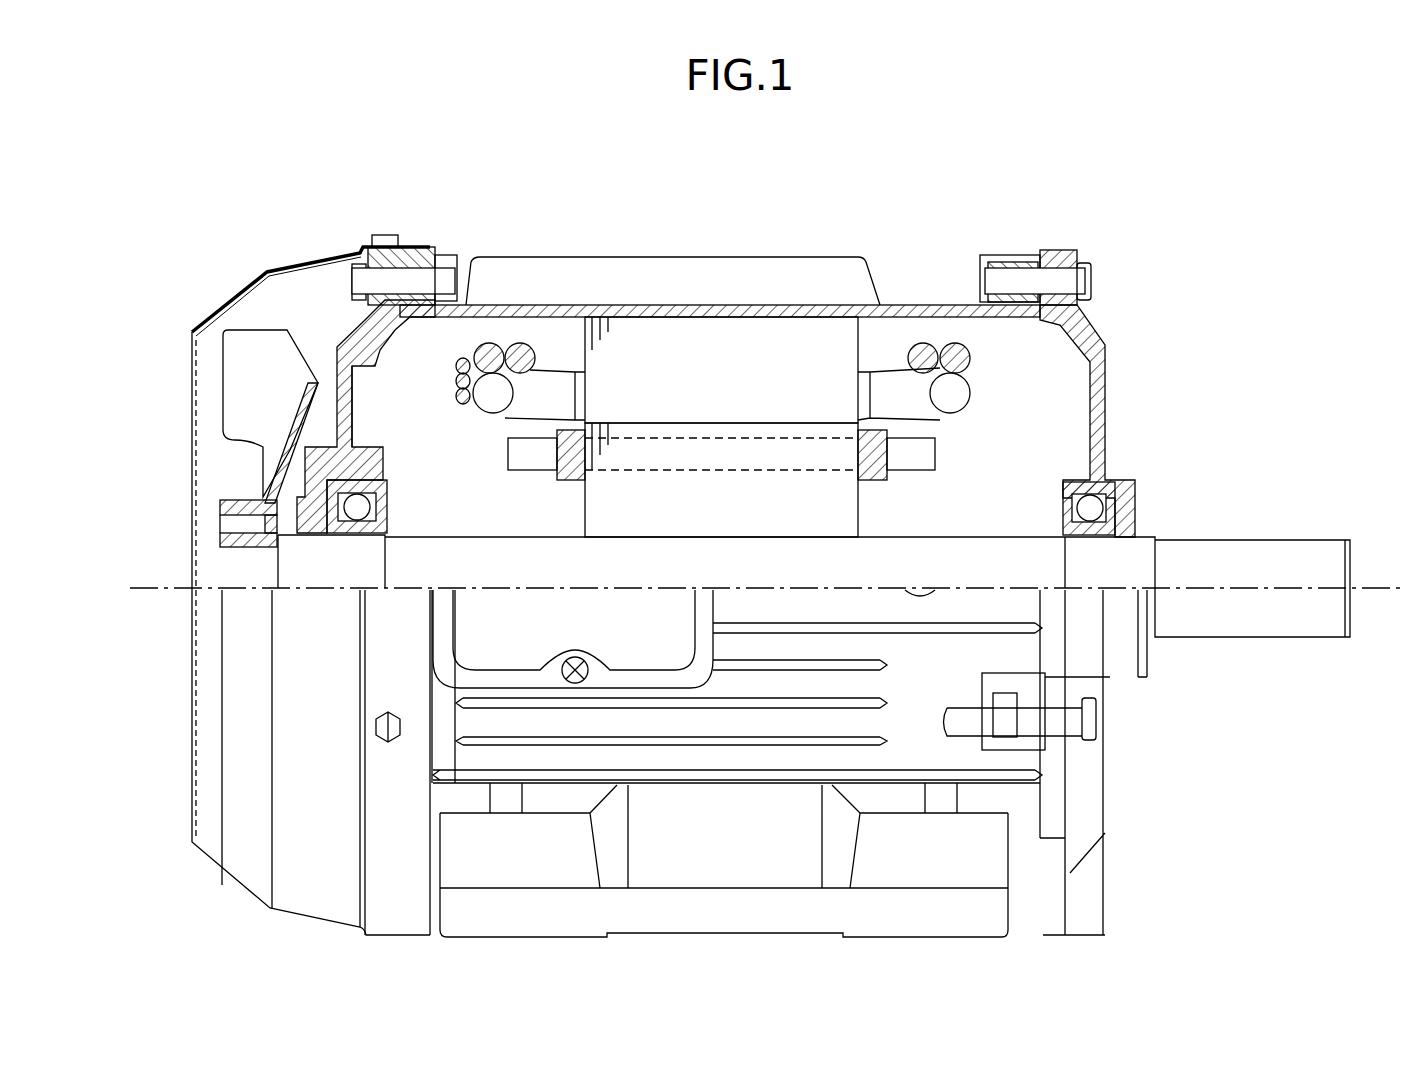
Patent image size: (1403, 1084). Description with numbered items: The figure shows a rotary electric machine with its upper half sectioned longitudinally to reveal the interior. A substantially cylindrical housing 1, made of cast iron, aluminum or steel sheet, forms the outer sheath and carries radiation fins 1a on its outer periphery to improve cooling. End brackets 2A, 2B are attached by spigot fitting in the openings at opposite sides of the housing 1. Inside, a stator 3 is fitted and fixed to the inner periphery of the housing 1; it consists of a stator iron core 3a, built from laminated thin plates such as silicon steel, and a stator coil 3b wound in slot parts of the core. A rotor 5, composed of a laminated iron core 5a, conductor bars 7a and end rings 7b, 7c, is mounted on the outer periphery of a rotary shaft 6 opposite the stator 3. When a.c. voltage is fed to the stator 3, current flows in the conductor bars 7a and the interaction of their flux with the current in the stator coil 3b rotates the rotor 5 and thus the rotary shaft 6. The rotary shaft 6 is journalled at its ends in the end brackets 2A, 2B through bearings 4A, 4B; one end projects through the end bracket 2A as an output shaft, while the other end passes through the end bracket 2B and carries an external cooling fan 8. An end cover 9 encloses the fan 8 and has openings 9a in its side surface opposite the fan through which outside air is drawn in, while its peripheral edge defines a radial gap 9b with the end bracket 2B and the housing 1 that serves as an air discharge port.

The housing 1 is at (515, 302).
The radiation fins 1a is at (755, 255).
The end bracket 2A is at (1095, 350).
The end bracket 2B is at (343, 345).
The stator 3 is at (673, 345).
The stator iron core 3a is at (603, 325).
The stator coil 3b is at (492, 345).
The bearing 4A is at (1140, 465).
The bearing 4B is at (352, 510).
The rotor 5 is at (815, 430).
The laminated iron core 5a is at (560, 462).
The rotary shaft 6 is at (425, 548).
The conductor bars 7a is at (930, 450).
The end ring 7b is at (880, 478).
The end ring 7c is at (560, 432).
The external cooling fan 8 is at (250, 342).
The end cover 9 is at (255, 283).
The openings 9a is at (190, 428).
The radial gap 9b is at (420, 248).